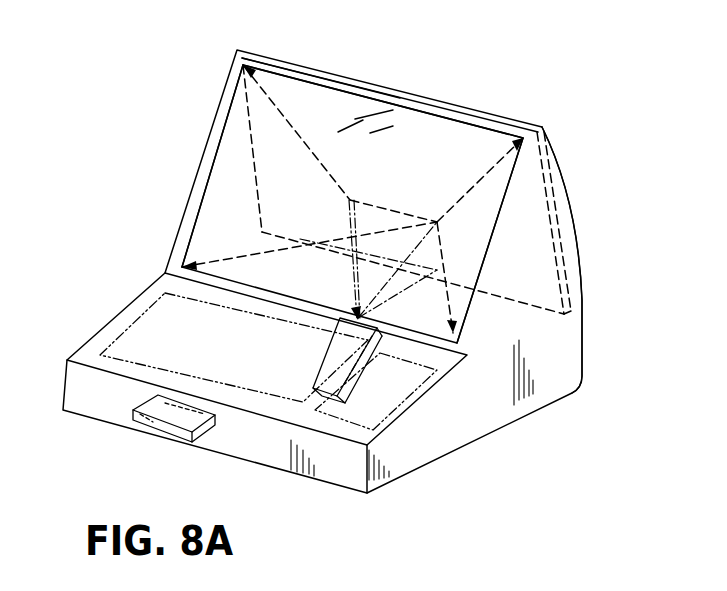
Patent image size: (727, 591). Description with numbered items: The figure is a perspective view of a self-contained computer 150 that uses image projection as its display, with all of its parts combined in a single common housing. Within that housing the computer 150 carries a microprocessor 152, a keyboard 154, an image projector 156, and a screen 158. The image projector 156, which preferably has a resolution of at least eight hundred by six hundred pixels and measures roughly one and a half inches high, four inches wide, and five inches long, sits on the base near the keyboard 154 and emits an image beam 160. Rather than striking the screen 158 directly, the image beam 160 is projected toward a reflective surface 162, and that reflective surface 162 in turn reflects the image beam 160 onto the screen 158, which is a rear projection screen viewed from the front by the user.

The self-contained computer 150 is at (424, 74).
The microprocessor 152 is at (172, 424).
The keyboard 154 is at (174, 332).
The image projector 156 is at (302, 360).
The screen 158 is at (303, 83).
The image beam 160 is at (402, 307).
The reflective surface 162 is at (520, 303).